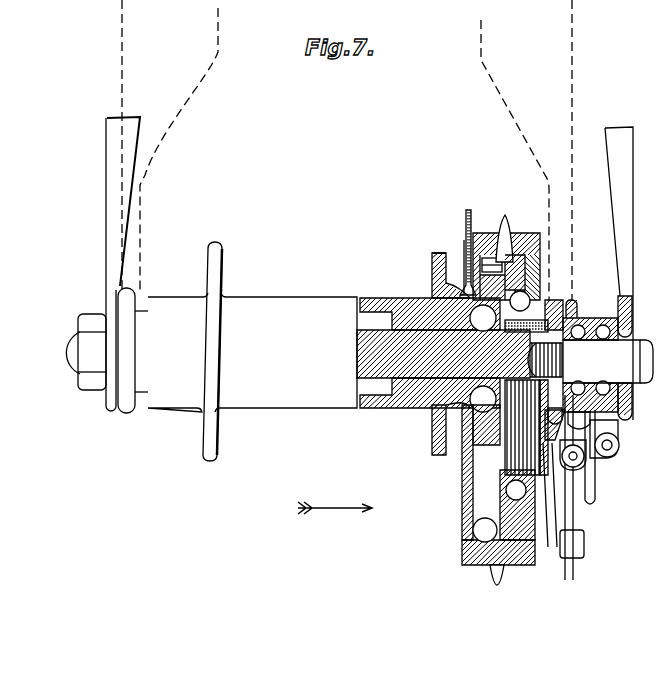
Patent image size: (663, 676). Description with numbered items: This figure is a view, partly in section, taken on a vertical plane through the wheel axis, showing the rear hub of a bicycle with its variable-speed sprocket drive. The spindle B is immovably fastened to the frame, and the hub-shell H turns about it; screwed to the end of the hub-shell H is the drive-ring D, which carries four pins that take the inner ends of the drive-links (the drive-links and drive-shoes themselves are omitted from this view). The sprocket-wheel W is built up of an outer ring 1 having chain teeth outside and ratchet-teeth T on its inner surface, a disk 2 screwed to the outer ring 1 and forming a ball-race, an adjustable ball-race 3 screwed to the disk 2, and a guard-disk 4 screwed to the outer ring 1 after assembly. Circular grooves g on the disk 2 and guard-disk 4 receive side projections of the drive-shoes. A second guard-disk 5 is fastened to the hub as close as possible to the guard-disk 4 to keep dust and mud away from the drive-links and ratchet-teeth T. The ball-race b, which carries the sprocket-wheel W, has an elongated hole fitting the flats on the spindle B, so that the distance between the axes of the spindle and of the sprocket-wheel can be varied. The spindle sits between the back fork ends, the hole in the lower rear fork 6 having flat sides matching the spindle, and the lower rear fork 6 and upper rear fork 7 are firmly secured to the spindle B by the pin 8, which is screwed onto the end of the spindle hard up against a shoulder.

The outer ring 1 is at (508, 240).
The disk 2 is at (547, 262).
The adjustable ball-race 3 is at (585, 285).
The guard-disk 4 is at (462, 520).
The guard-disk 5 is at (466, 246).
The lower rear fork 6 is at (345, 206).
The upper rear fork 7 is at (108, 272).
The pin 8 is at (608, 361).
The spindle B is at (357, 355).
The drive-ring D is at (450, 455).
The hub-shell H is at (324, 351).
The ratchet-teeth T is at (462, 528).
The sprocket-wheel W is at (500, 210).
The ball-race b is at (548, 285).
The circular grooves g is at (540, 245).